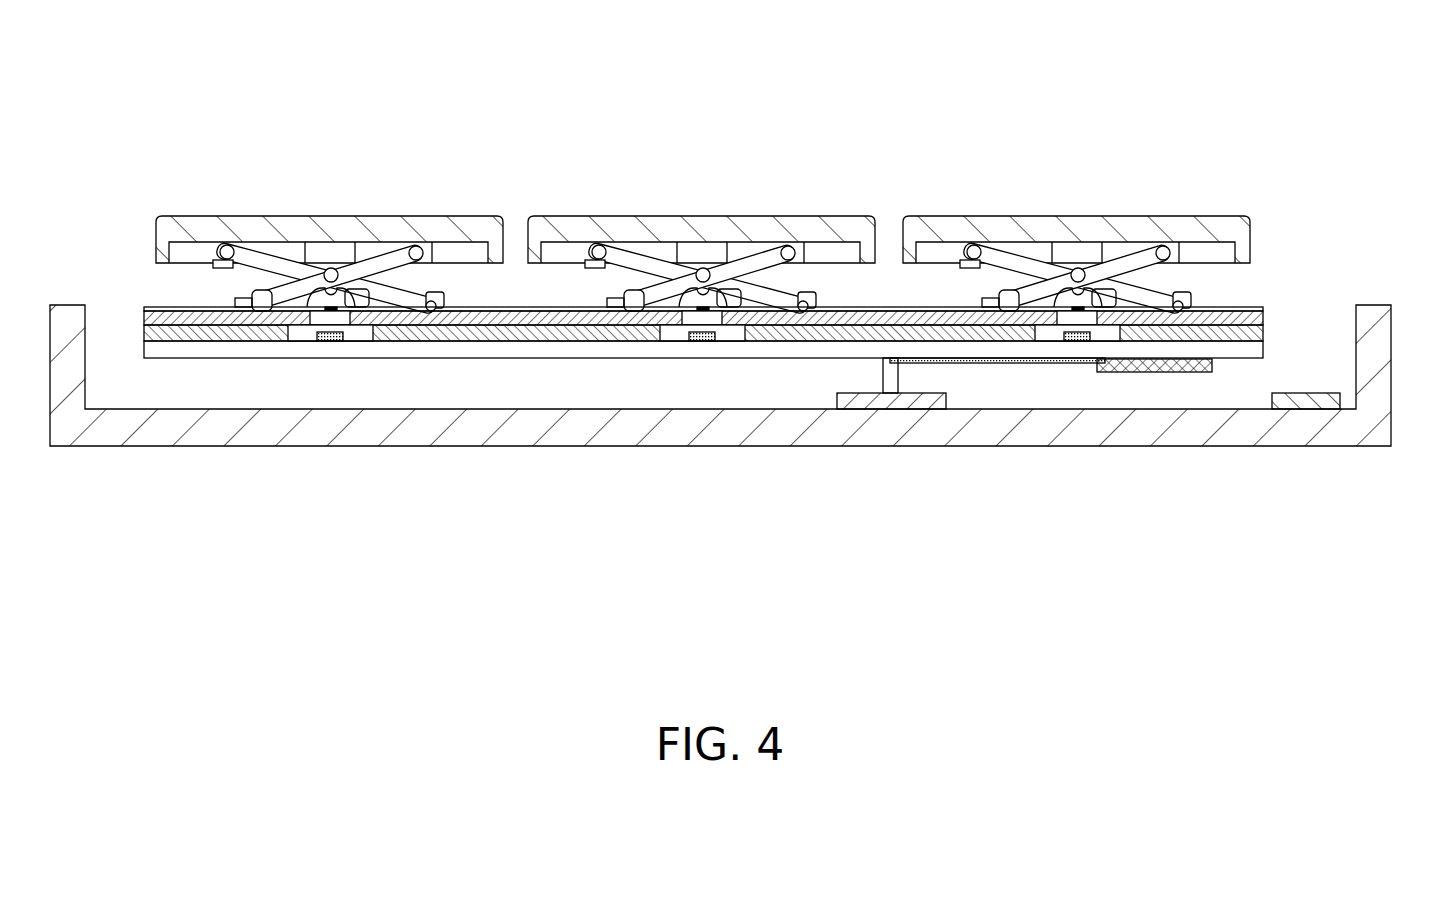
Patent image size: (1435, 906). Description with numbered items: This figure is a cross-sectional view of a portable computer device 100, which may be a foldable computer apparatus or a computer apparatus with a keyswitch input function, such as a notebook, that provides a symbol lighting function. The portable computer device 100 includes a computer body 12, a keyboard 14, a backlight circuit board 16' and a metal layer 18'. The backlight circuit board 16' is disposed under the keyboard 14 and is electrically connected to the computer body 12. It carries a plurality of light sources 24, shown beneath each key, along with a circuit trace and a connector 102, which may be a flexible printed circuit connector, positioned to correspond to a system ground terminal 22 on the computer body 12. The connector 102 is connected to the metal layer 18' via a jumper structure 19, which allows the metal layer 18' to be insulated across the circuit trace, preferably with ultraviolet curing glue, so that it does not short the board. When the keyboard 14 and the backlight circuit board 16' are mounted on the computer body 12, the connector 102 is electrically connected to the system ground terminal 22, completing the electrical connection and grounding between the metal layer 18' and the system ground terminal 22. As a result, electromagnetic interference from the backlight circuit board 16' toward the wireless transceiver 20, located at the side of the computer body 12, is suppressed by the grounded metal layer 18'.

The portable computer device 100 is at (139, 113).
The computer body 12 is at (1391, 299).
The keyboard 14 is at (137, 343).
The backlight circuit board 16' is at (703, 423).
The light sources 24 is at (330, 341).
The connector 102 is at (890, 377).
The system ground terminal 22 is at (913, 403).
The jumper structure 19 is at (993, 363).
The metal layer 18' is at (1154, 432).
The wireless transceiver 20 is at (1307, 402).